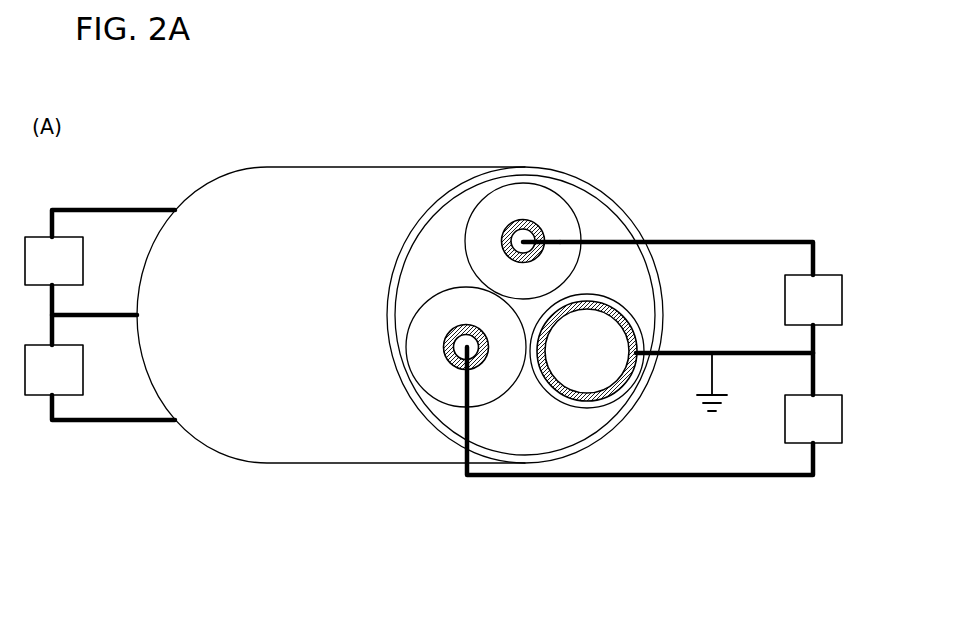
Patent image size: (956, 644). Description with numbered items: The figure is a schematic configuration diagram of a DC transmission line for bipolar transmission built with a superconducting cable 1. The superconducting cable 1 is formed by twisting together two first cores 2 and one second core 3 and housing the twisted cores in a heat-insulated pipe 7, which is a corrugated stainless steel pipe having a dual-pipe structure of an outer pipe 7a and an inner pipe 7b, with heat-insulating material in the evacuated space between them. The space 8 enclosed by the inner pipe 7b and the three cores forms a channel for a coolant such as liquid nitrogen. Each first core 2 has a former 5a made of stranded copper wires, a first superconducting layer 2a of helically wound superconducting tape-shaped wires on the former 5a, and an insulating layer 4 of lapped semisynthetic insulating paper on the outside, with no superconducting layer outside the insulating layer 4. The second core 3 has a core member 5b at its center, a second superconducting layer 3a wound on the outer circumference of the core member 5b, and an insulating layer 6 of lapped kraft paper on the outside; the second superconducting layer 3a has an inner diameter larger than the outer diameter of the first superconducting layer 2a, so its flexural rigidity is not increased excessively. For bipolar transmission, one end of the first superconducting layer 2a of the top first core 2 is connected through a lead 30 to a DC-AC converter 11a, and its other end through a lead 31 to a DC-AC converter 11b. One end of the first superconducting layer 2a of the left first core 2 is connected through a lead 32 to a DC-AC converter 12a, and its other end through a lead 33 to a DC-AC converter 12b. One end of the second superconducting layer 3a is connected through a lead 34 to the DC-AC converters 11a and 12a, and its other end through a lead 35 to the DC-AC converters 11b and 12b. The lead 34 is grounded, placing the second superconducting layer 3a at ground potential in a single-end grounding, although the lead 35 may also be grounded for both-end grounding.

The superconducting cable 1 is at (340, 165).
The first core 2 is at (464, 318).
The first superconducting layer 2a is at (523, 220).
The second core 3 is at (606, 366).
The second superconducting layer 3a is at (587, 392).
The insulating layer 4 is at (543, 195).
The former 5a is at (545, 233).
The core member 5b is at (570, 400).
The insulating layer 6 is at (638, 325).
The heat-insulated pipe 7 is at (525, 278).
The outer pipe 7a is at (472, 133).
The inner pipe 7b is at (497, 178).
The space 8 is at (433, 227).
The DC-AC converter 11a is at (813, 300).
The DC-AC converter 11b is at (54, 261).
The DC-AC converter 12a is at (813, 419).
The DC-AC converter 12b is at (54, 370).
The lead 30 is at (705, 243).
The lead 31 is at (105, 210).
The lead 32 is at (707, 475).
The lead 33 is at (80, 420).
The lead 34 is at (733, 353).
The lead 35 is at (88, 315).